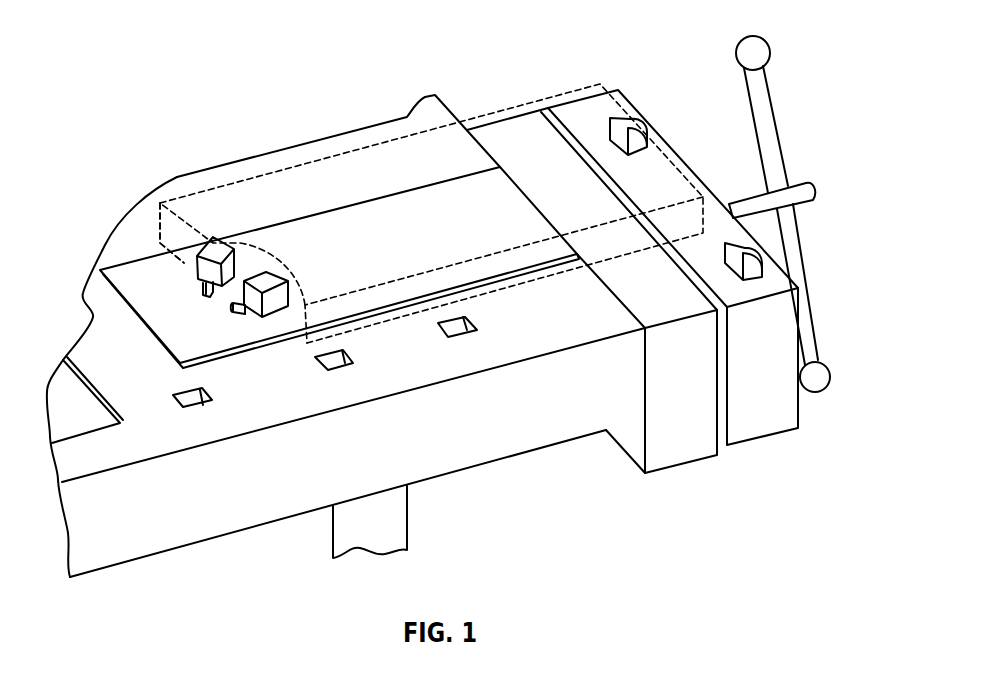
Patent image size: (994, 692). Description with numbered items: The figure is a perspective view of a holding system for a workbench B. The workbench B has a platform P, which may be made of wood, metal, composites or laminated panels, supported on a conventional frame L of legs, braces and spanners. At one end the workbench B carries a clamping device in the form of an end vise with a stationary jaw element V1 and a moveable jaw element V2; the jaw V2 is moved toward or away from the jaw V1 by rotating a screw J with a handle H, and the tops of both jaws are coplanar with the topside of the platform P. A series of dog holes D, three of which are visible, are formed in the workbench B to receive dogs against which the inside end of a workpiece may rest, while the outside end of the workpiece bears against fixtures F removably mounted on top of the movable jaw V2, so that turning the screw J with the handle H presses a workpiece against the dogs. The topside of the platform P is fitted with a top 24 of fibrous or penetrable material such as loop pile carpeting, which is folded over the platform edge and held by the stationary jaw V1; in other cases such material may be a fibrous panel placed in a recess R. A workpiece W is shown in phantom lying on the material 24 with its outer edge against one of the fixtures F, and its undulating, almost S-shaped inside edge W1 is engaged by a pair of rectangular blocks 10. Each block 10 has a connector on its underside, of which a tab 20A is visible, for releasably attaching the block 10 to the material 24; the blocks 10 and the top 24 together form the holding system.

The workbench B is at (263, 532).
The frame L is at (407, 517).
The recess R is at (80, 412).
The dog holes D is at (213, 396).
The platform P is at (228, 173).
The top 24 is at (387, 192).
The workpiece W is at (512, 107).
The inside edge W1 is at (160, 243).
The rectangular blocks 10 is at (220, 250).
The tab 20A is at (198, 290).
The stationary jaw element V1 is at (670, 448).
The moveable jaw element V2 is at (762, 425).
The fixtures F is at (628, 128).
The screw J is at (747, 199).
The handle H is at (753, 112).